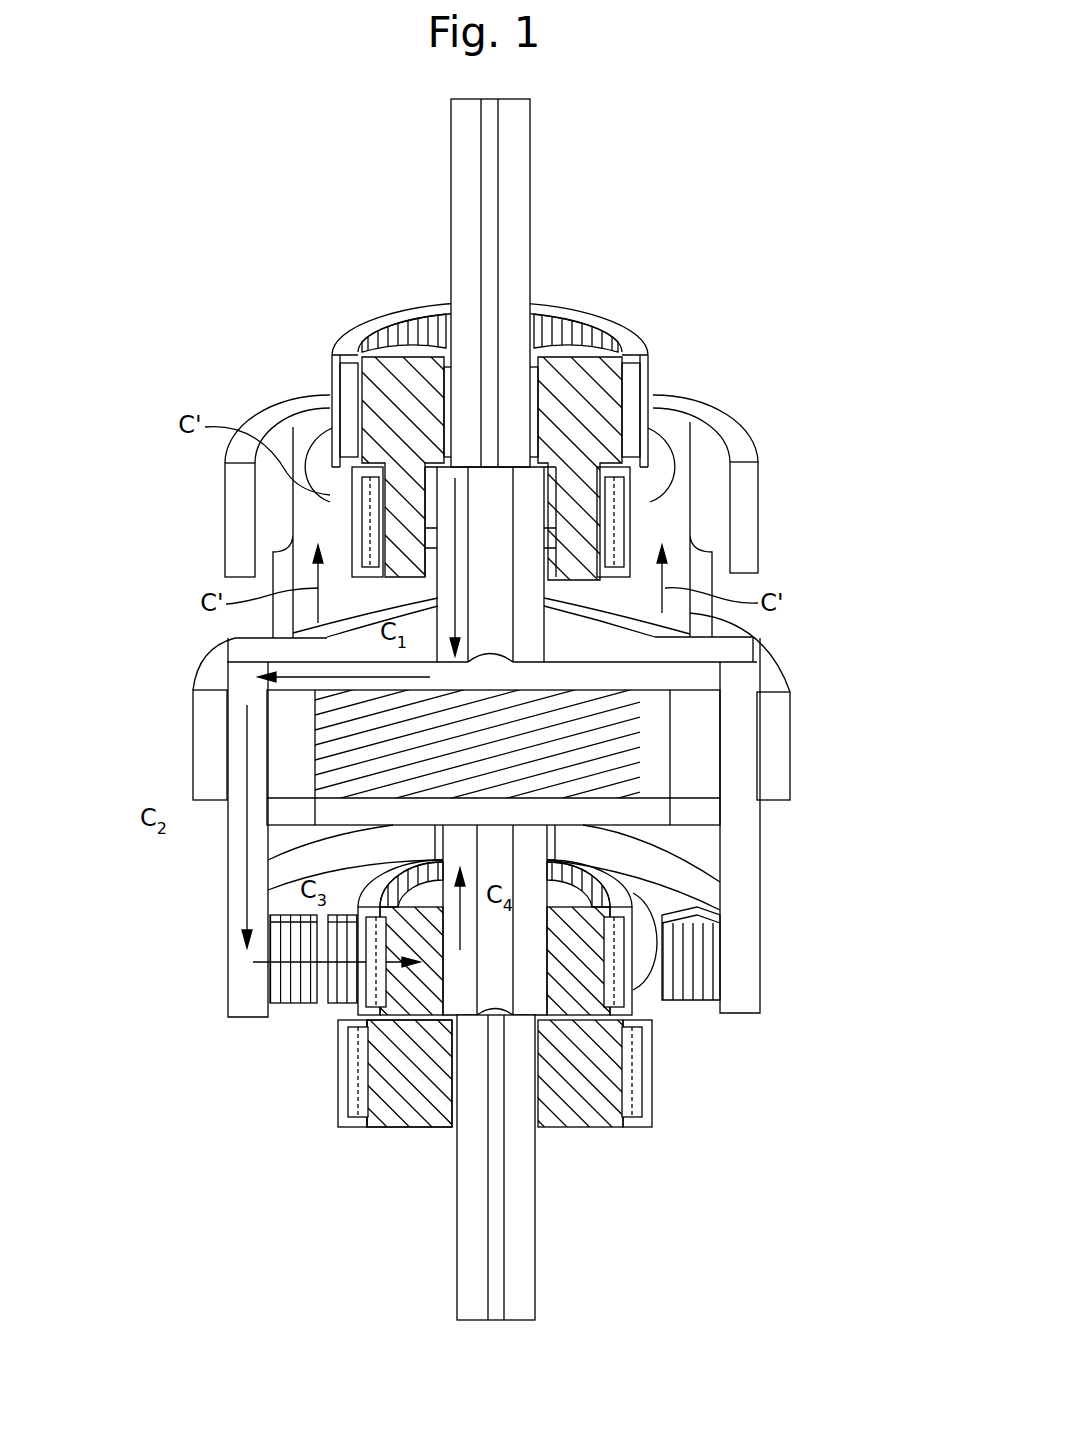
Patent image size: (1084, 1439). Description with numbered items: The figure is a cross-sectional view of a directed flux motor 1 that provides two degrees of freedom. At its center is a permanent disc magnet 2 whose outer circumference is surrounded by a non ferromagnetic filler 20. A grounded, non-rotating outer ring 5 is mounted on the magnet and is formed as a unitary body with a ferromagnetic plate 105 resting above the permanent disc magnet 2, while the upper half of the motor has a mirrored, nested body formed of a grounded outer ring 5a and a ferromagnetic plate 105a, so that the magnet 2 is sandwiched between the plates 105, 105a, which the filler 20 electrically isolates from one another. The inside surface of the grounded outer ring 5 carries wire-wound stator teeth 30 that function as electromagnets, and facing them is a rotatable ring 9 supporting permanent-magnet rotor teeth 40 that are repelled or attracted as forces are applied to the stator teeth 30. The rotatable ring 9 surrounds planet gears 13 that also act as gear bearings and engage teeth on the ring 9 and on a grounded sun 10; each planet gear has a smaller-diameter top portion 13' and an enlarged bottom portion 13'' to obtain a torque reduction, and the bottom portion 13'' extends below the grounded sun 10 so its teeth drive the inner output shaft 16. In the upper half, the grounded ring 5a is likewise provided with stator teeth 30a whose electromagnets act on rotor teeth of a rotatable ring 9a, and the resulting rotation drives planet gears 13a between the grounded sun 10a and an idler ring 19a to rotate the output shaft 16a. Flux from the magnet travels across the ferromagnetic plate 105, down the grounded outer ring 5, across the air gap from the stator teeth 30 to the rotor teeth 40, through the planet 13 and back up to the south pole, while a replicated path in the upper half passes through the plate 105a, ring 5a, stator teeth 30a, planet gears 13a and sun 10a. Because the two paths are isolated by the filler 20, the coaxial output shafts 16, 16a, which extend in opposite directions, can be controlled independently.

The directed flux motor 1 is at (232, 318).
The permanent disc magnet 2 is at (320, 775).
The grounded outer ring 5 is at (240, 972).
The grounded outer ring 5a is at (259, 424).
The rotatable ring 9 is at (627, 988).
The rotatable ring 9a is at (345, 527).
The grounded sun 10 is at (540, 968).
The grounded sun 10a is at (530, 560).
The planet gears 13 is at (489, 1108).
The planet gears 13a is at (400, 370).
The top portion 13' is at (495, 1010).
The bottom portion 13'' is at (409, 1073).
The output shaft 16 is at (473, 1270).
The output shaft 16a is at (513, 170).
The idler ring 19a is at (630, 330).
The non ferromagnetic filler 20 is at (205, 718).
The stator teeth 30 is at (292, 1005).
The stator teeth 30a is at (322, 455).
The rotor teeth 40 is at (342, 1005).
The ferromagnetic plate 105 is at (607, 645).
The ferromagnetic plate 105a is at (660, 810).